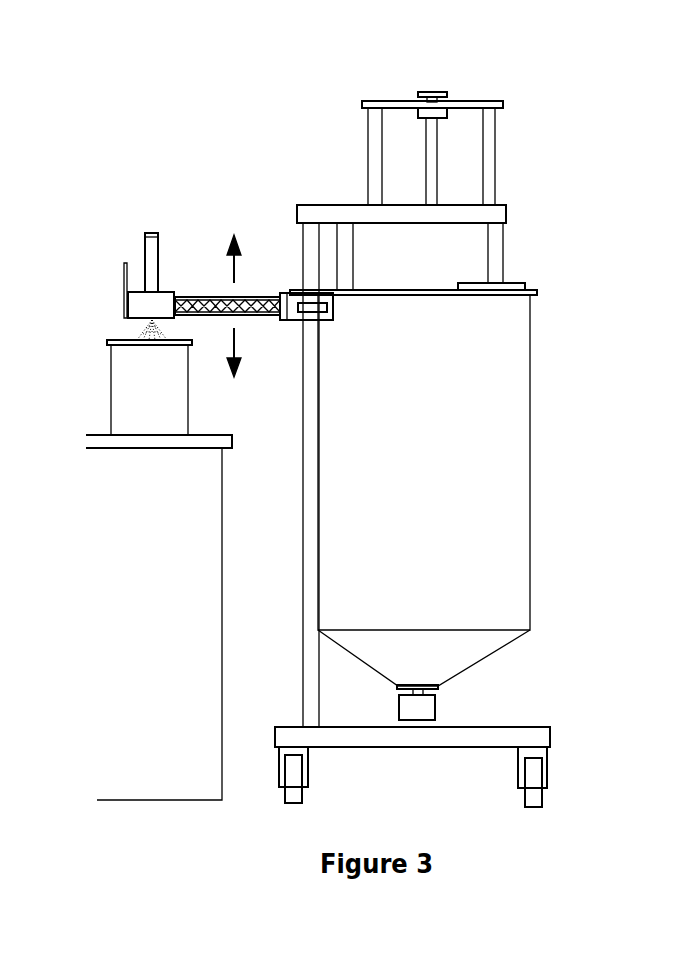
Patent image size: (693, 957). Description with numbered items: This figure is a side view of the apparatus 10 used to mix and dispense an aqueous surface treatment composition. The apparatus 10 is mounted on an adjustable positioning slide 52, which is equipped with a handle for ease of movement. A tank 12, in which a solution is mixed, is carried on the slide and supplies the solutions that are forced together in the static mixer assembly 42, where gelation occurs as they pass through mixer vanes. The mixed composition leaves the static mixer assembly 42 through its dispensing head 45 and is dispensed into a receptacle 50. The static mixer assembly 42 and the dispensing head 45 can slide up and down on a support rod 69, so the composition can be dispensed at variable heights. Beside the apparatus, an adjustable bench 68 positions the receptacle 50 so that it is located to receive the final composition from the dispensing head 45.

The apparatus 10 is at (543, 123).
The tank 12 is at (510, 330).
The static mixer assembly 42 is at (253, 315).
The dispensing head 45 is at (155, 263).
The receptacle 50 is at (180, 413).
The adjustable positioning slide 52 is at (505, 733).
The adjustable bench 68 is at (208, 568).
The support rod 69 is at (304, 400).